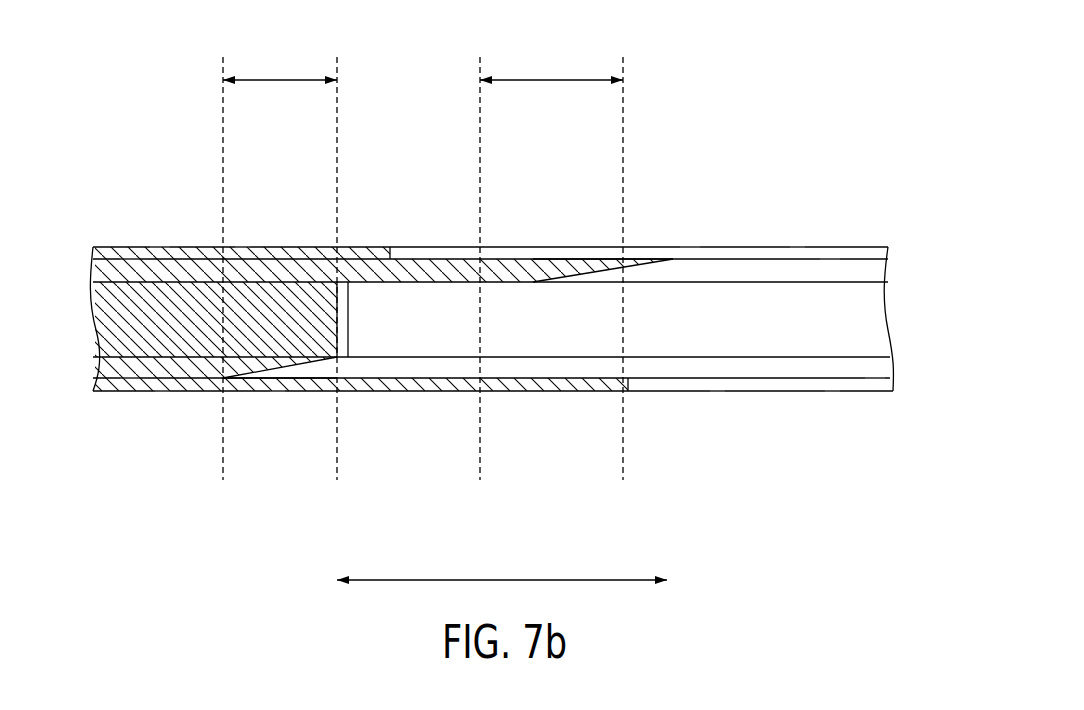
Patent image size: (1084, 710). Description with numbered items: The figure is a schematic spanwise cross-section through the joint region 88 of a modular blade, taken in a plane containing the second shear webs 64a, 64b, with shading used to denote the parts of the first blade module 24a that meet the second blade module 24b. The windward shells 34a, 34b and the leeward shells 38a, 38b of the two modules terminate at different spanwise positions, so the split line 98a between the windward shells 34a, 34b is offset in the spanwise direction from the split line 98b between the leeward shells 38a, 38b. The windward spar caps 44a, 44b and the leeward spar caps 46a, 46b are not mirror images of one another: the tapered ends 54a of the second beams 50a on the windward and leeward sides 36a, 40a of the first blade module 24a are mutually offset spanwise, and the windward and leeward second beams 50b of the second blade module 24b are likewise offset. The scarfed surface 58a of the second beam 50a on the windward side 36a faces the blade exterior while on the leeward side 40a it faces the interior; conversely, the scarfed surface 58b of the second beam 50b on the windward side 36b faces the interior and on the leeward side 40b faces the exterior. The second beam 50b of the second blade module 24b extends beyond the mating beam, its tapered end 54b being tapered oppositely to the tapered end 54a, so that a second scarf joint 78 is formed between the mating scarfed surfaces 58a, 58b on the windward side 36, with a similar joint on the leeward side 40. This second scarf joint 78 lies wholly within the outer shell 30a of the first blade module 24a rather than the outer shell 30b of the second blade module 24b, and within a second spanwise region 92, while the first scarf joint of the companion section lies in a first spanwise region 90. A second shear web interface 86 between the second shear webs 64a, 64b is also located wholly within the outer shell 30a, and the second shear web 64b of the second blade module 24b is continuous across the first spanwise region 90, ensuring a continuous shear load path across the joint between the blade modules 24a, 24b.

The first blade module 24a is at (157, 147).
The second blade module 24b is at (890, 193).
The outer shell of the first blade module 30a is at (295, 252).
The outer shell of the second blade module 30b is at (737, 247).
The windward shell of the first blade module 34a is at (278, 395).
The windward shell of the second blade module 34b is at (717, 395).
The windward side 36 is at (500, 457).
The windward side of the first blade module 36a is at (163, 395).
The windward side of the second blade module 36b is at (833, 395).
The leeward shell of the first blade module 38a is at (243, 245).
The leeward shell of the second blade module 38b is at (692, 245).
The leeward side 40 is at (553, 167).
The leeward side of the first blade module 40a is at (159, 245).
The leeward side of the second blade module 40b is at (797, 245).
The windward spar cap of the first blade module 44a is at (130, 373).
The windward spar cap of the second blade module 44b is at (876, 382).
The leeward spar cap of the first blade module 46a is at (130, 272).
The leeward spar cap of the second blade module 46b is at (830, 272).
The second beam of the first blade module 50a is at (213, 265).
The second beam of the second blade module 50b is at (700, 272).
The tapered end of the second beam of the first blade module 54a is at (249, 355).
The tapered end of the second beam of the second blade module 54b is at (340, 367).
The scarfed surface of the second beam of the first blade module 58a is at (296, 364).
The scarfed surface of the second beam of the second blade module 58b is at (318, 367).
The second shear web of the first blade module 64a is at (110, 320).
The second shear web of the second blade module 64b is at (878, 325).
The second scarf joint 78 is at (620, 273).
The second shear web interface 86 is at (350, 320).
The joint region 88 is at (443, 137).
The first spanwise region 90 is at (551, 80).
The second spanwise region 92 is at (280, 80).
The split line between the windward shells 98a is at (630, 395).
The split line between the leeward shells 98b is at (389, 243).